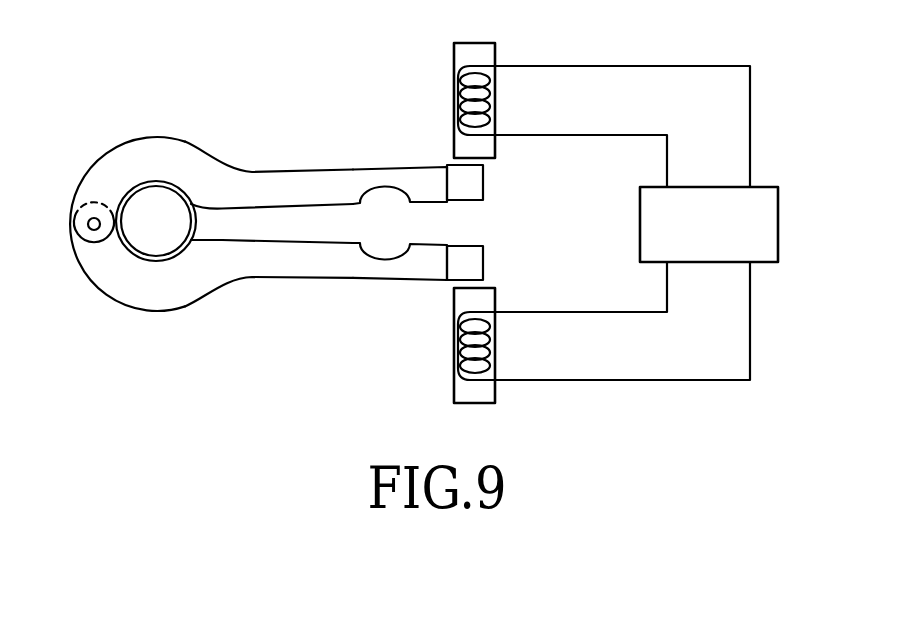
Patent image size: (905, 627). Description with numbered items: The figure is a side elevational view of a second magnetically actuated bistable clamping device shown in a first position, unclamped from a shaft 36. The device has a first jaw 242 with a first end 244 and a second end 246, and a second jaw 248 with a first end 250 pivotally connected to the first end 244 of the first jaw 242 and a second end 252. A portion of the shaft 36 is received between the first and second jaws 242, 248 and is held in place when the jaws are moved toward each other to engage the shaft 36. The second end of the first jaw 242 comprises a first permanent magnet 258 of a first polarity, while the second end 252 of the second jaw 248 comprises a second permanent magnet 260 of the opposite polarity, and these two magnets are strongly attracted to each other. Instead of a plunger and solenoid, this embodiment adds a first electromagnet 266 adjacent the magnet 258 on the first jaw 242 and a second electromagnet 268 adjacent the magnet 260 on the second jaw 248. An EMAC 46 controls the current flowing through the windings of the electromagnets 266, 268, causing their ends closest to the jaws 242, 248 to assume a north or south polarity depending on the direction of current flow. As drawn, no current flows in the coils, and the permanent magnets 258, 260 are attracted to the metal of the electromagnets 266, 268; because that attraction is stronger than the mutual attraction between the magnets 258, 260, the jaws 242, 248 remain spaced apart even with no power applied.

The shaft 36 is at (162, 198).
The EMAC 46 is at (779, 207).
The first jaw 242 is at (337, 176).
The first end of first jaw 244 is at (107, 178).
The second end of first jaw 246 is at (424, 172).
The second jaw 248 is at (305, 262).
The first end of second jaw 250 is at (113, 272).
The second end of second jaw 252 is at (415, 273).
The first permanent magnet 258 is at (486, 183).
The second permanent magnet 260 is at (486, 263).
The first electromagnet 266 is at (488, 56).
The second electromagnet 268 is at (492, 390).